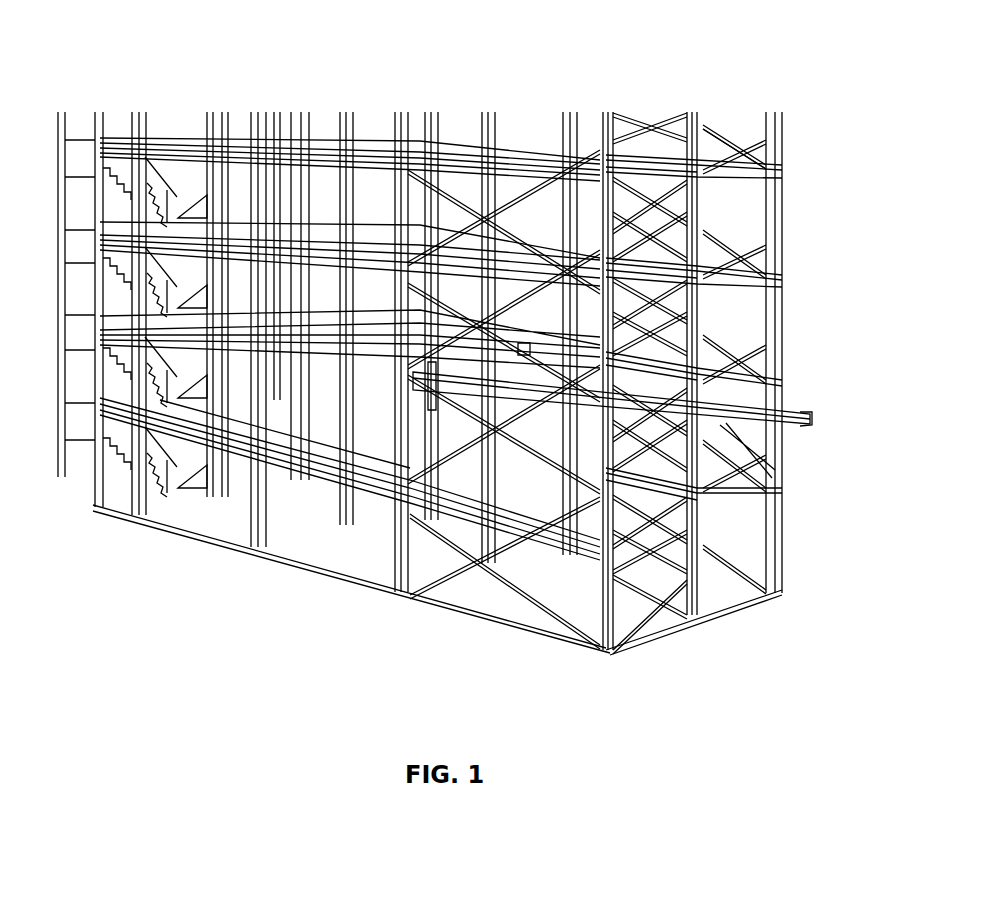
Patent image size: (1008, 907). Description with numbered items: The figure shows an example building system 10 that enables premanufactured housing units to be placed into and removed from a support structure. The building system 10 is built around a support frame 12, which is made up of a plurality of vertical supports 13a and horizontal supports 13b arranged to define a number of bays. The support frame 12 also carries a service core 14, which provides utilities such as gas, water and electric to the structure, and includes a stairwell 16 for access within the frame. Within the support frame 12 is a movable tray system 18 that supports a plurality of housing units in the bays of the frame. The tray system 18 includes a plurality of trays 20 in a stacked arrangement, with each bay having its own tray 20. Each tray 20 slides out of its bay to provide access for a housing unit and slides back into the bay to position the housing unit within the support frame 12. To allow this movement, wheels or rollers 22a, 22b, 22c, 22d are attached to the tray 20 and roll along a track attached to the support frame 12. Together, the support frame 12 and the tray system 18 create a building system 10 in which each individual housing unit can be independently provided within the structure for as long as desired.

The building system 10 is at (510, 84).
The support frame 12 is at (606, 112).
The vertical supports 13a is at (783, 253).
The horizontal supports 13b is at (735, 165).
The service core 14 is at (190, 121).
The stairwell 16 is at (108, 480).
The tray system 18 is at (812, 392).
The tray 20 is at (780, 410).
The wheel or roller 22a is at (525, 345).
The wheel or roller 22b is at (812, 414).
The wheel or roller 22c is at (772, 476).
The wheel or roller 22d is at (433, 410).